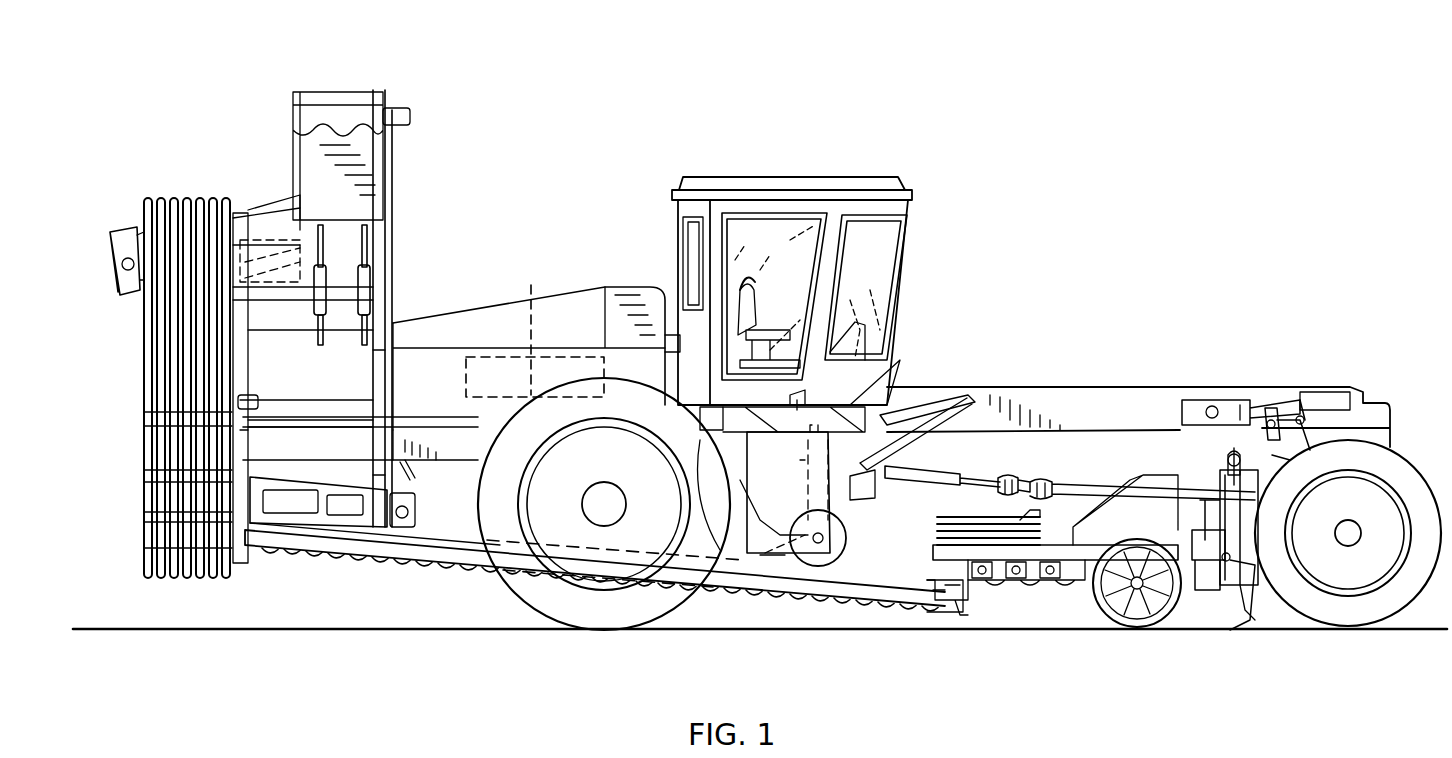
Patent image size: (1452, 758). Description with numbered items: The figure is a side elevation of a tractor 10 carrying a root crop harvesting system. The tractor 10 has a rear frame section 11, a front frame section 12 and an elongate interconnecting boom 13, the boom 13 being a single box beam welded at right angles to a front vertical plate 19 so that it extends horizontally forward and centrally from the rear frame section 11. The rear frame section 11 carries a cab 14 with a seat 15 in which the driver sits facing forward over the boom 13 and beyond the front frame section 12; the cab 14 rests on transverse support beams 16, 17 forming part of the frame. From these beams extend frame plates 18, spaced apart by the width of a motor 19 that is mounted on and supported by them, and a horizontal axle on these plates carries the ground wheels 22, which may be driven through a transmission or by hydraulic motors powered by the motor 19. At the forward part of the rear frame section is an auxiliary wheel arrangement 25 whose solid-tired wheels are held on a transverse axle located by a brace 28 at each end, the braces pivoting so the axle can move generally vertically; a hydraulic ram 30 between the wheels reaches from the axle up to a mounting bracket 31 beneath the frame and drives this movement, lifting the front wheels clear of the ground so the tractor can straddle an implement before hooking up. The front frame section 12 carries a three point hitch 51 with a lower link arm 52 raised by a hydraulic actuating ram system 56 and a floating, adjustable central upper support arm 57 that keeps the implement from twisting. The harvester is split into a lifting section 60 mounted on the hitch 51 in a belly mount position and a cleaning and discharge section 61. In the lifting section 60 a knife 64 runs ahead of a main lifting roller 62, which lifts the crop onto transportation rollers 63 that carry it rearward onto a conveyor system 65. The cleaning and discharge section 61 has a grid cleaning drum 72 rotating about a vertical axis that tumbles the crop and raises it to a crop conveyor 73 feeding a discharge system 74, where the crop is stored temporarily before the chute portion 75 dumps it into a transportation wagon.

The tractor 10 is at (1083, 190).
The rear frame section 11 is at (749, 340).
The front frame section 12 is at (1330, 377).
The boom 13 is at (1085, 382).
The cab 14 is at (787, 175).
The seat 15 is at (758, 300).
The transverse support beam 16 is at (700, 425).
The transverse support beam 17 is at (792, 407).
The frame plates 18 is at (448, 442).
The motor 19 is at (531, 297).
The ground wheels 22 is at (517, 590).
The auxiliary wheel arrangement 25 is at (846, 543).
The brace 28 is at (604, 606).
The hydraulic ram 30 is at (848, 502).
The mounting bracket 31 is at (805, 442).
The hitch 51 is at (1228, 450).
The lower link arm 52 is at (1261, 600).
The hydraulic actuating ram system 56 is at (1242, 402).
The central upper support arm 57 is at (1225, 462).
The lifting section 60 is at (1046, 600).
The cleaning and discharge section 61 is at (259, 343).
The main lifting roller 62 is at (1150, 620).
The transportation rollers 63 is at (990, 590).
The knife 64 is at (1244, 594).
The conveyor system 65 is at (363, 566).
The cleaning drum 72 is at (145, 568).
The crop conveyor 73 is at (111, 265).
The discharge system 74 is at (387, 155).
The chute portion 75 is at (123, 420).